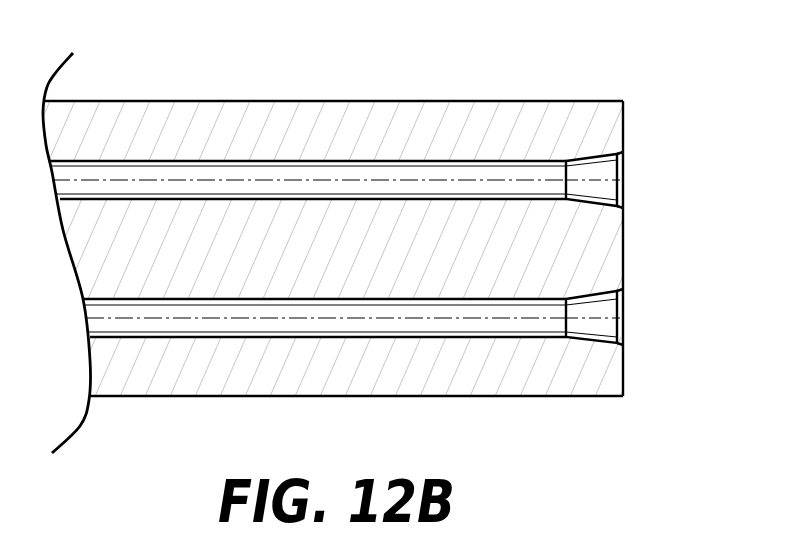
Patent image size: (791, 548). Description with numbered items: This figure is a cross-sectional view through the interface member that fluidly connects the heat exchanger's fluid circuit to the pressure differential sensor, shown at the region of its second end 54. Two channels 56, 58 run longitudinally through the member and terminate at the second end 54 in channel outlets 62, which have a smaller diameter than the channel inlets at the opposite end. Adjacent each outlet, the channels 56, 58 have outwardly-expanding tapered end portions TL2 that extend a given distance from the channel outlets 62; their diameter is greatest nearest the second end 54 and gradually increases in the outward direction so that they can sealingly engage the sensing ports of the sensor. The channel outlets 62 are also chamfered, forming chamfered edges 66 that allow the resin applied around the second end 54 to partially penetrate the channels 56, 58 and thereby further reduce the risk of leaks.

The second end 54 is at (622, 127).
The channel 56 is at (383, 173).
The channel 58 is at (405, 323).
The channel outlet 62 is at (623, 204).
The chamfered edge 66 is at (622, 158).
The tapered end portion TL2 is at (566, 128).